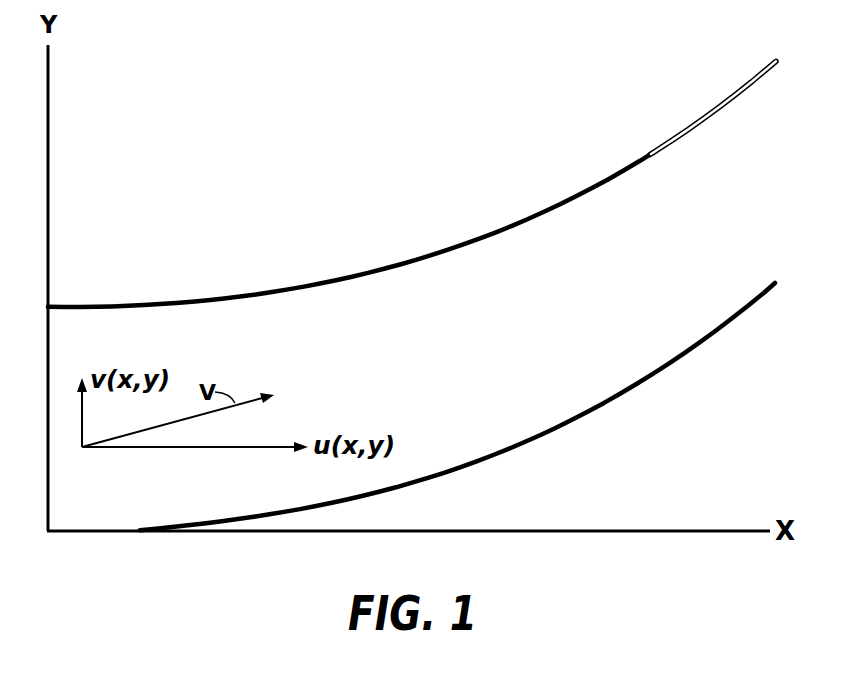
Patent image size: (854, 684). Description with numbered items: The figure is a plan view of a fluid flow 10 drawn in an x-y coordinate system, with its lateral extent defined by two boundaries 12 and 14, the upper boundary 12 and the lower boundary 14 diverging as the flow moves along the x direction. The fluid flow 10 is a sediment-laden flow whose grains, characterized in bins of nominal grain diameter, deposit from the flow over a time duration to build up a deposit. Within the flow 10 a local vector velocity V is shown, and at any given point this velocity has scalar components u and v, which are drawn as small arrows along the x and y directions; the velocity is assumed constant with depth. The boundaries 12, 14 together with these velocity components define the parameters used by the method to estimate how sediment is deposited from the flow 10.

The fluid flow 10 is at (584, 301).
The boundary 12 is at (645, 157).
The boundary 14 is at (706, 339).